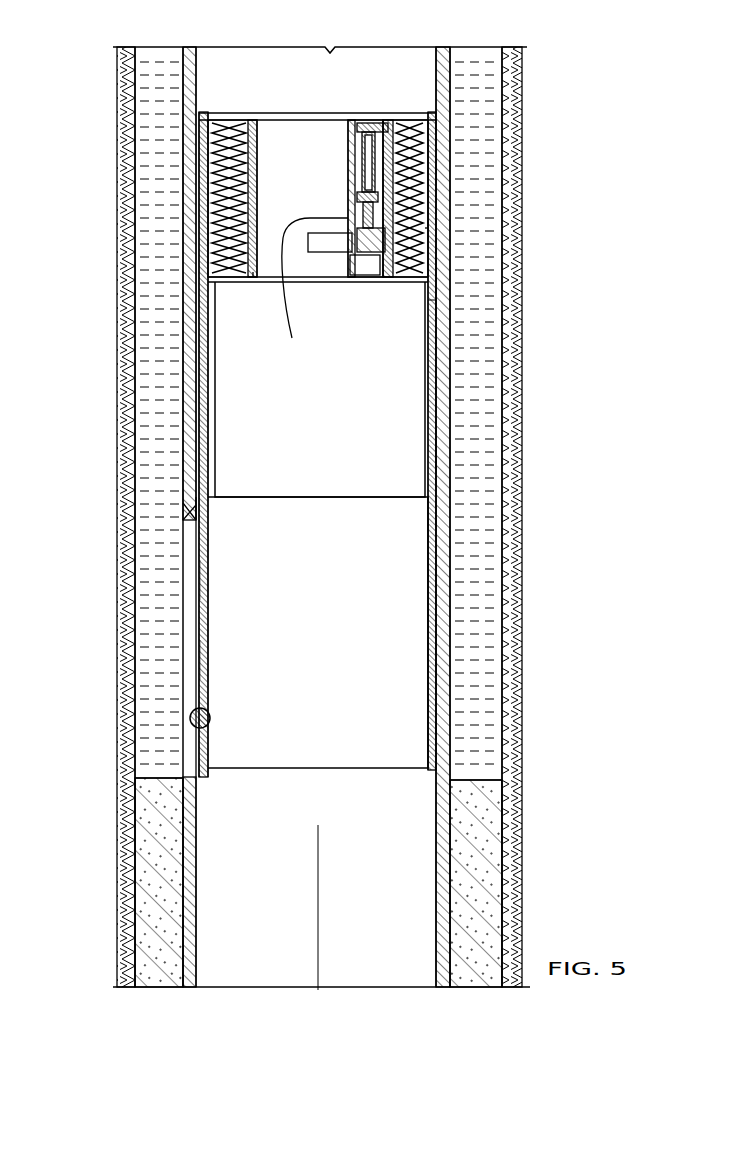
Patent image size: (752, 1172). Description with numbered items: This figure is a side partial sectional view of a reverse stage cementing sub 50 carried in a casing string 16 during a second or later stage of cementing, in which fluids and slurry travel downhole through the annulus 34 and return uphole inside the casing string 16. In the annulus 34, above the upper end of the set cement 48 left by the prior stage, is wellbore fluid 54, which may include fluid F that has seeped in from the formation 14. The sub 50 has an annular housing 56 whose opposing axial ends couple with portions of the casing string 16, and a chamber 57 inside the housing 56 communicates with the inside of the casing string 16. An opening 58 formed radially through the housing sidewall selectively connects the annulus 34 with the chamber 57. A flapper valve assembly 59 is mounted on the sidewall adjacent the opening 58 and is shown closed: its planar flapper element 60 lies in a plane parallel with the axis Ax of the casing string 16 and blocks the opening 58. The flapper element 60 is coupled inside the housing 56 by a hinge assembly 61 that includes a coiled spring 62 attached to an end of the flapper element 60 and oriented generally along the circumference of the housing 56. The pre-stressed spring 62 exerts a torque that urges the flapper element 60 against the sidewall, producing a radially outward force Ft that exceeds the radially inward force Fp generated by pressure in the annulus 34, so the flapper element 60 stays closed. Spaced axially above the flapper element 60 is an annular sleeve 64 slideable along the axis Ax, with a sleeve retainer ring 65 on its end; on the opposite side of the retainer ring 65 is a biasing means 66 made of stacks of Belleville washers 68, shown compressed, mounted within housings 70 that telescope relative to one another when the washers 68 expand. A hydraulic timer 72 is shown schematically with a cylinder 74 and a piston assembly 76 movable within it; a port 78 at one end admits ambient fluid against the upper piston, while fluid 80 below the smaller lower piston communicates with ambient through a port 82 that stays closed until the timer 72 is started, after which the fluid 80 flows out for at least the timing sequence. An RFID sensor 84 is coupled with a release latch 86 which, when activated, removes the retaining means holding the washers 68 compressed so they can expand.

The formation 14 is at (128, 68).
The casing string 16 is at (452, 398).
The annulus 34 is at (159, 155).
The set cement 48 is at (137, 838).
The reverse stage cementing sub 50 is at (199, 236).
The wellbore fluid 54 is at (483, 97).
The annular housing 56 is at (440, 468).
The chamber 57 is at (370, 593).
The opening 58 is at (183, 545).
The flapper valve assembly 59 is at (225, 586).
The flapper element 60 is at (209, 663).
The hinge assembly 61 is at (191, 722).
The coiled spring 62 is at (209, 716).
The annular sleeve 64 is at (440, 337).
The sleeve retainer ring 65 is at (450, 318).
The biasing means 66 is at (259, 268).
The Belleville washers 68 is at (203, 180).
The housings 70 is at (257, 185).
The hydraulic timer 72 is at (346, 121).
The cylinder 74 is at (347, 160).
The piston assembly 76 is at (347, 175).
The port 78 is at (368, 113).
The fluid 80 is at (292, 338).
The port 82 is at (430, 232).
The RFID sensor 84 is at (328, 252).
The release latch 86 is at (375, 275).
The fluid F is at (163, 333).
The force Fp is at (190, 614).
The force Ft is at (213, 617).
The axis Ax is at (320, 886).